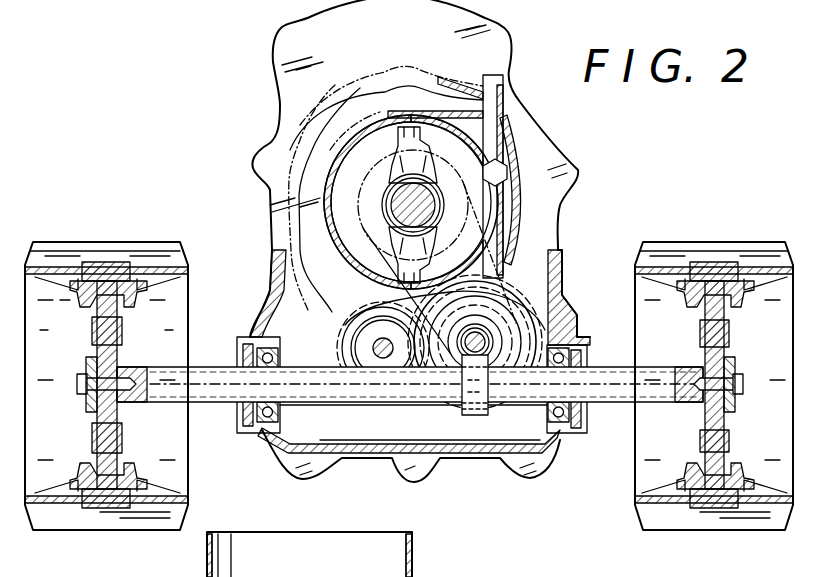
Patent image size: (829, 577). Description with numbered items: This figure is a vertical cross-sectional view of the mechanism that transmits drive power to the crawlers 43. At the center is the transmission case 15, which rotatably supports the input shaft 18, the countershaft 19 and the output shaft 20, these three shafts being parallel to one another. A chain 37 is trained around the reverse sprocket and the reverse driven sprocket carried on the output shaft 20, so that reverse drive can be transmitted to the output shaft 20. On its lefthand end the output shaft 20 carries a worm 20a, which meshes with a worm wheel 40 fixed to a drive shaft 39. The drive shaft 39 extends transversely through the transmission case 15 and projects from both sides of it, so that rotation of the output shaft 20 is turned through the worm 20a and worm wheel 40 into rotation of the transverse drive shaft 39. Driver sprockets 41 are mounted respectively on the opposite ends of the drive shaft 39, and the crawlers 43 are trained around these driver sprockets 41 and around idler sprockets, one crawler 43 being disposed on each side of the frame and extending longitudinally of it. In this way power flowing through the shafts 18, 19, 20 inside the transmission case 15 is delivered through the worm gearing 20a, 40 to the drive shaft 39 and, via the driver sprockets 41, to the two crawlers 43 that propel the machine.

The transmission case 15 is at (348, 458).
The input shaft 18 is at (400, 208).
The countershaft 19 is at (373, 348).
The output shaft 20 is at (505, 318).
The worm 20a is at (452, 380).
The chain 37 is at (345, 320).
The drive shaft 39 is at (213, 367).
The worm wheel 40 is at (465, 410).
The driver sprockets 41 is at (117, 320).
The crawlers 43 is at (105, 505).